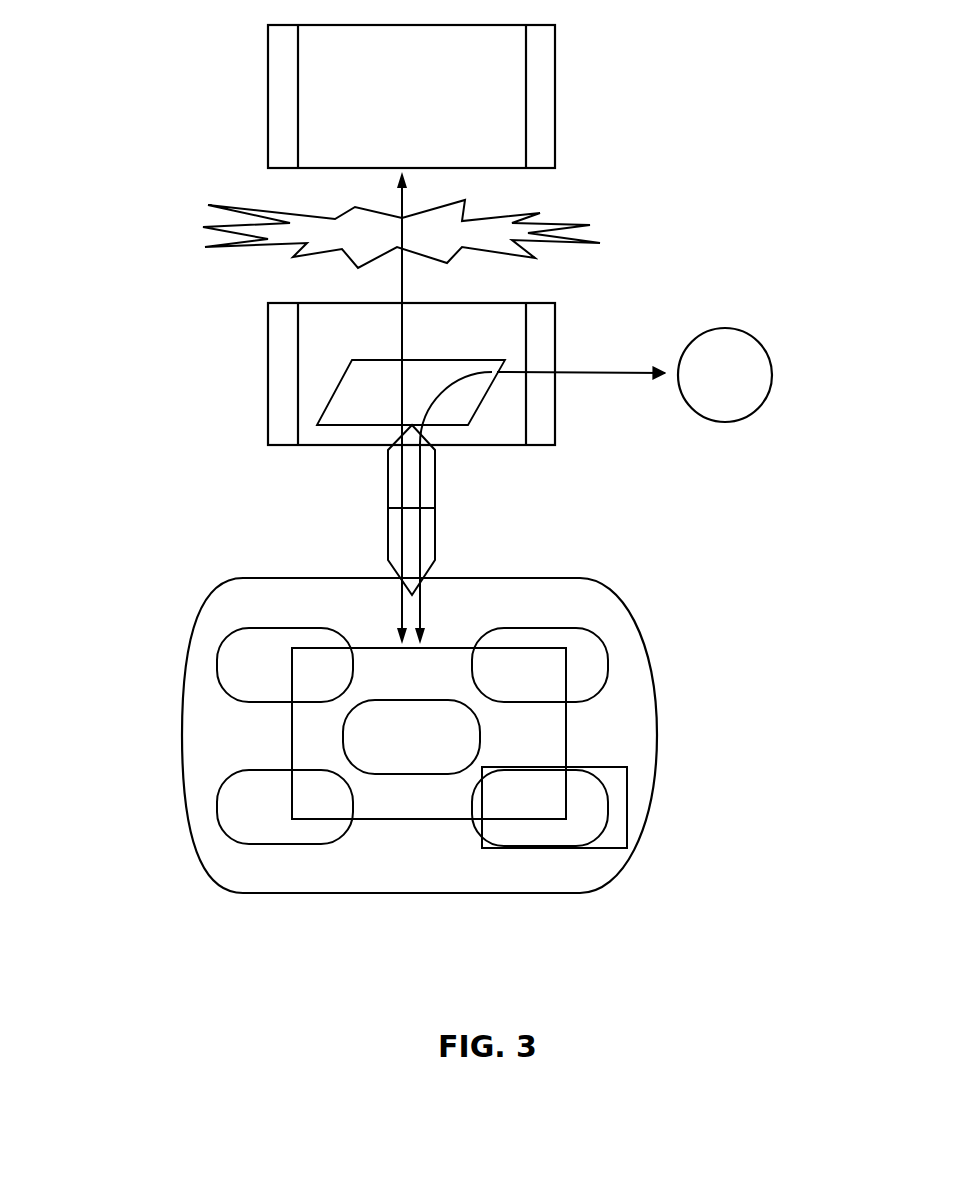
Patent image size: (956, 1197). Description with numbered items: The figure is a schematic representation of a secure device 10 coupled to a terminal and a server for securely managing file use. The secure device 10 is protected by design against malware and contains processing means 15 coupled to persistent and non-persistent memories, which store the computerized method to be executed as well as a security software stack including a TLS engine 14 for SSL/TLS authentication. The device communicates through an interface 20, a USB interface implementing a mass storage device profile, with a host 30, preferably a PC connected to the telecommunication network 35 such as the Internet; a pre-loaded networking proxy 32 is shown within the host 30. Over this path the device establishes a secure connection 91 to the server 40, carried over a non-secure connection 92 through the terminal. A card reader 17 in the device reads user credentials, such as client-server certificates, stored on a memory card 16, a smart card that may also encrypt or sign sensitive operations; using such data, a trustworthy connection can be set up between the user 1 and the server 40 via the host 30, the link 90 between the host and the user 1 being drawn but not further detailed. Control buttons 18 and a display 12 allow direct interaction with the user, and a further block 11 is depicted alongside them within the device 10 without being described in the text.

The user 1 is at (727, 395).
The secure device 10 is at (360, 893).
The first memory region 11 is at (248, 833).
The display 12 is at (248, 698).
The TLS engine 14 is at (463, 775).
The processing means 15 is at (417, 820).
The memory card 16 is at (607, 798).
The card reader 17 is at (618, 848).
The control buttons 18 is at (608, 678).
The interface 20 is at (400, 538).
The host 30 is at (295, 370).
The proxy software 32 is at (332, 412).
The telecommunication network 35 is at (460, 220).
The server 40 is at (290, 156).
The user interaction path 90 is at (618, 373).
The secure connection 91 is at (273, 408).
The non-secure connection 92 is at (400, 275).